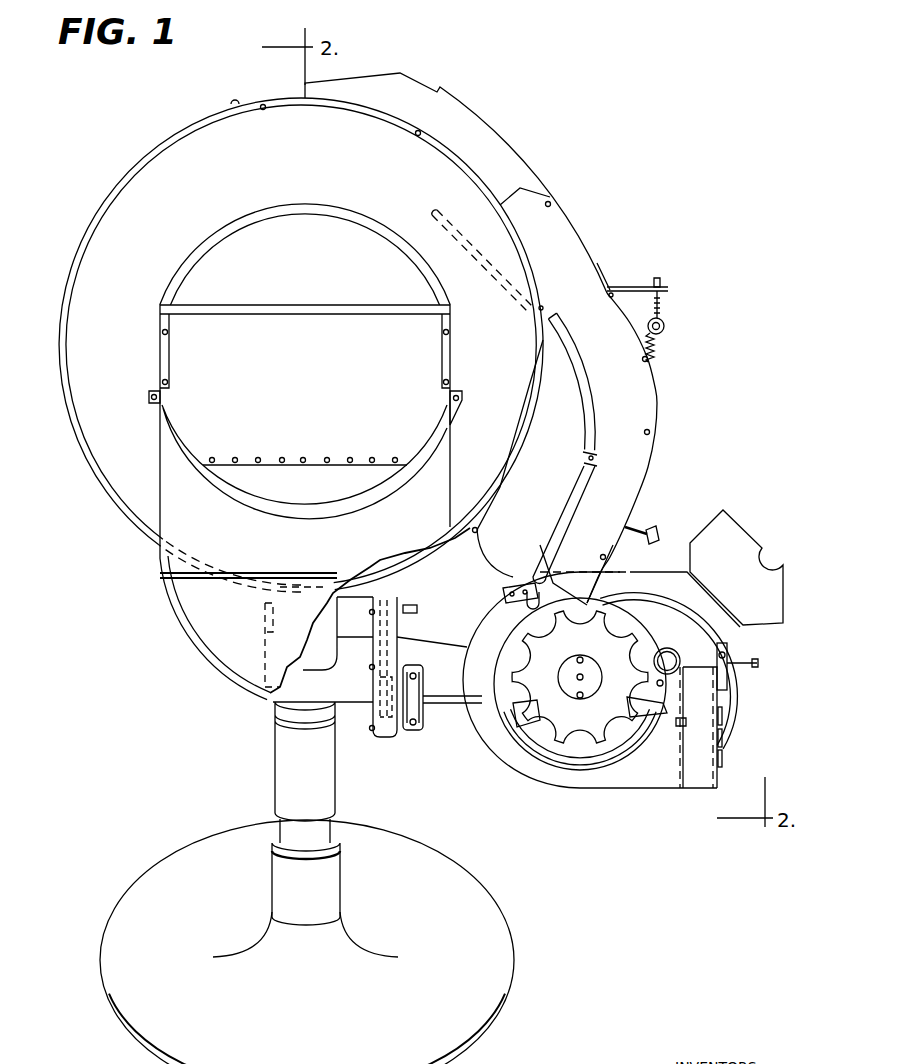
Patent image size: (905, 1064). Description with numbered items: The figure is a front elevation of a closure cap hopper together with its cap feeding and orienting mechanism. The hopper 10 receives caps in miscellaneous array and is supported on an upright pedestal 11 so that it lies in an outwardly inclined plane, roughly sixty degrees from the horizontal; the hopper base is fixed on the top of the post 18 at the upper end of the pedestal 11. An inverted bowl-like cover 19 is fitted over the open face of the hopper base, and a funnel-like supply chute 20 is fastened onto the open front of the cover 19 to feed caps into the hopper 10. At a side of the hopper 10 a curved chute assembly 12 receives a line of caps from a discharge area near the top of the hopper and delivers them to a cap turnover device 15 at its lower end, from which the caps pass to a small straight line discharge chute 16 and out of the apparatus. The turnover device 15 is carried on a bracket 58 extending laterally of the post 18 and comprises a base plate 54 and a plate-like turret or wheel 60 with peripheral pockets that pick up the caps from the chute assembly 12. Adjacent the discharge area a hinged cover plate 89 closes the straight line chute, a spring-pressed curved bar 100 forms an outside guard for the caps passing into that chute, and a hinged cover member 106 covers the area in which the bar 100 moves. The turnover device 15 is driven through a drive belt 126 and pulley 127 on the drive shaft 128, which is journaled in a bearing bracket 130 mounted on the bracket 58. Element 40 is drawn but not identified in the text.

The hopper 10 is at (60, 256).
The upright pedestal 11 is at (267, 763).
The curved chute assembly 12 is at (668, 378).
The cap turnover device 15 is at (530, 788).
The straight line discharge chute 16 is at (733, 767).
The post 18 is at (330, 624).
The cover 19 is at (110, 465).
The supply chute 20 is at (312, 402).
The guide panel 40 is at (545, 520).
The base plate 54 is at (663, 777).
The bracket 58 is at (358, 693).
The turret plate 60 is at (590, 649).
The cover plate 89 is at (697, 780).
The curved bar 100 is at (660, 620).
The cover member 106 is at (745, 545).
The drive belt 126 is at (417, 609).
The pulley 127 is at (392, 670).
The drive shaft 128 is at (442, 698).
The bearing bracket 130 is at (413, 731).